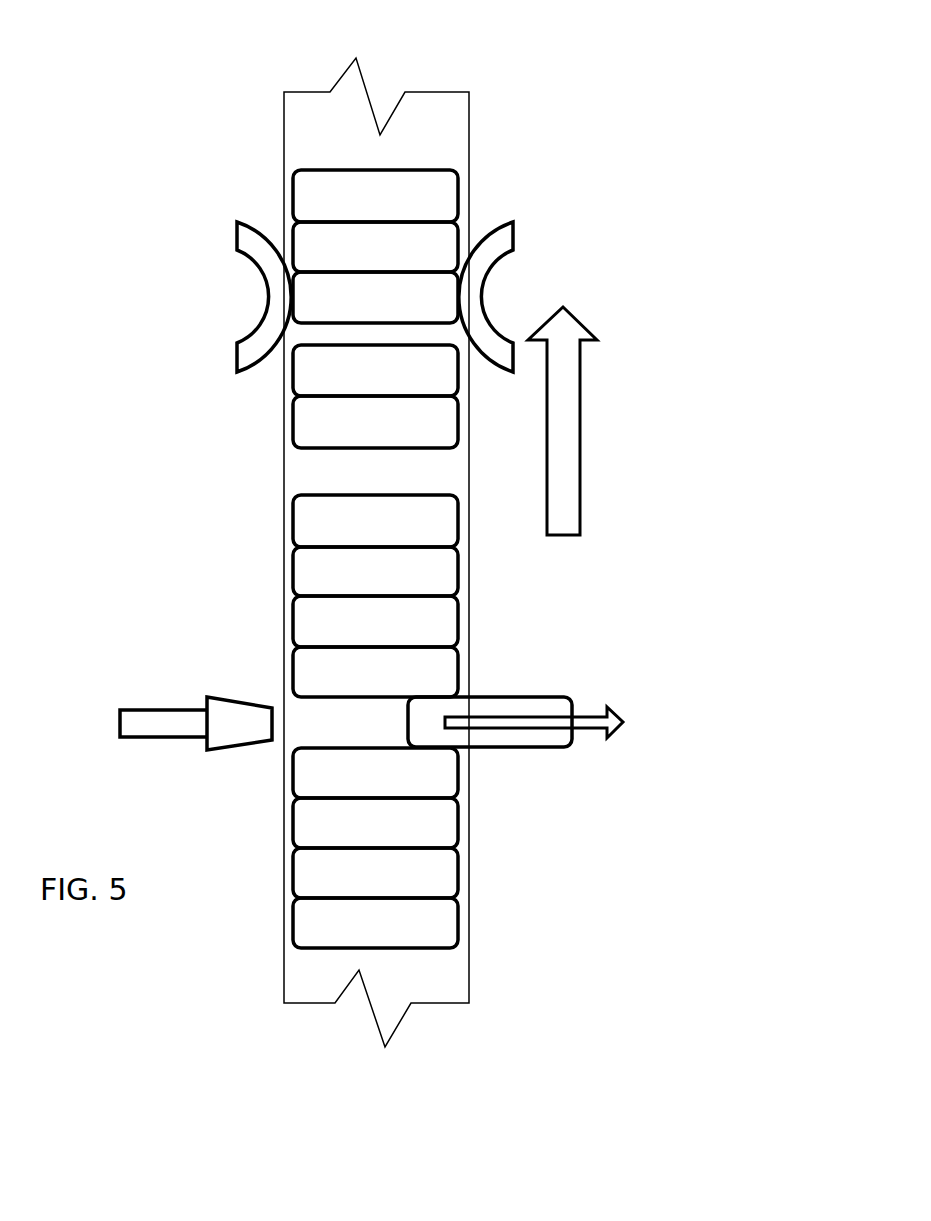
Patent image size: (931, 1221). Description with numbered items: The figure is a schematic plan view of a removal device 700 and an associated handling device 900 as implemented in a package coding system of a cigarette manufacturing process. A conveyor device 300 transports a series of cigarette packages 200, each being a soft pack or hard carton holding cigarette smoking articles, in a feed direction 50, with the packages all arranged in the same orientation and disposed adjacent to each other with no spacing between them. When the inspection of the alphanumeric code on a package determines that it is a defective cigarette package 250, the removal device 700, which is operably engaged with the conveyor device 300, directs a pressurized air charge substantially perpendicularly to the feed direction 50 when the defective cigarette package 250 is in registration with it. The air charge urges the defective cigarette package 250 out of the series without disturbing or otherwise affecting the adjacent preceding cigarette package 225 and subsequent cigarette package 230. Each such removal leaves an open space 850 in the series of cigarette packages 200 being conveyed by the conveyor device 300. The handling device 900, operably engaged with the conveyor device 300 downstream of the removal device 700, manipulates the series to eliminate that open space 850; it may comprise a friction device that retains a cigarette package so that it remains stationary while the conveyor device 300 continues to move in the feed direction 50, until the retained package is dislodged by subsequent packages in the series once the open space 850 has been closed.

The feed direction 50 is at (563, 483).
The cigarette packages 200 is at (307, 622).
The preceding cigarette package 225 is at (438, 772).
The subsequent cigarette package 230 is at (438, 672).
The defective cigarette package 250 is at (547, 702).
The conveyor device 300 is at (310, 973).
The removal device 700 is at (172, 722).
The open space 850 is at (432, 326).
The handling device 900 is at (238, 232).